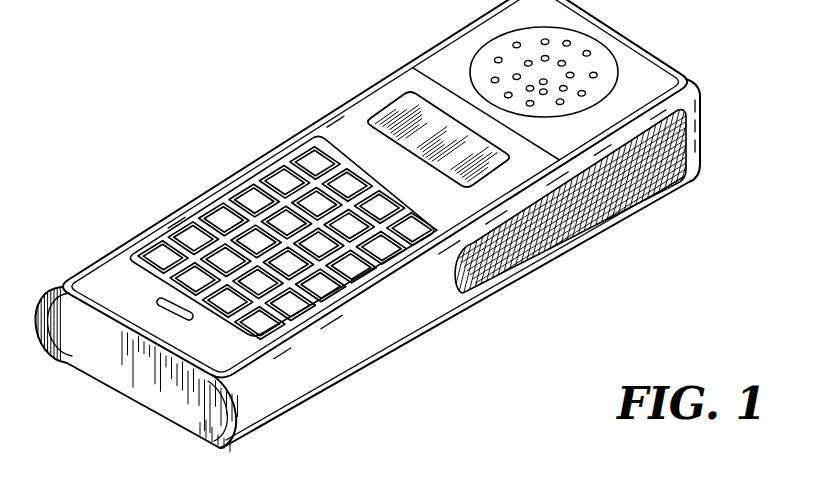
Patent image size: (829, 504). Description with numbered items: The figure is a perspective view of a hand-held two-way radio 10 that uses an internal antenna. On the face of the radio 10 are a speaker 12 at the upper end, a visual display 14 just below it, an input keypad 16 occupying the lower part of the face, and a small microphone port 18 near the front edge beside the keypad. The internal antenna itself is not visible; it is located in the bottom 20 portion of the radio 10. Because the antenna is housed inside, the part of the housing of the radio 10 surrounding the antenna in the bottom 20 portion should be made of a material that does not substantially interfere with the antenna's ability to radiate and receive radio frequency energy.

The hand-held two-way radio 10 is at (679, 72).
The speaker 12 is at (606, 53).
The visual display 14 is at (377, 118).
The input keypad 16 is at (245, 203).
The microphone port 18 is at (158, 301).
The bottom portion 20 is at (133, 382).